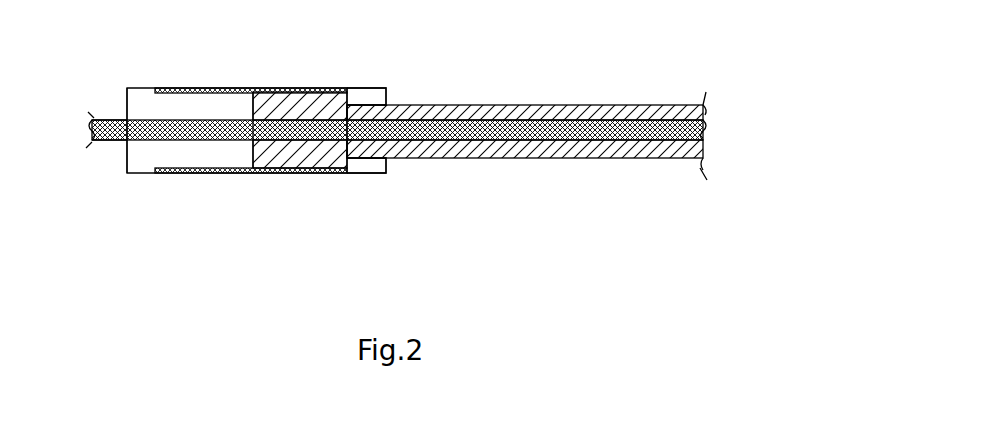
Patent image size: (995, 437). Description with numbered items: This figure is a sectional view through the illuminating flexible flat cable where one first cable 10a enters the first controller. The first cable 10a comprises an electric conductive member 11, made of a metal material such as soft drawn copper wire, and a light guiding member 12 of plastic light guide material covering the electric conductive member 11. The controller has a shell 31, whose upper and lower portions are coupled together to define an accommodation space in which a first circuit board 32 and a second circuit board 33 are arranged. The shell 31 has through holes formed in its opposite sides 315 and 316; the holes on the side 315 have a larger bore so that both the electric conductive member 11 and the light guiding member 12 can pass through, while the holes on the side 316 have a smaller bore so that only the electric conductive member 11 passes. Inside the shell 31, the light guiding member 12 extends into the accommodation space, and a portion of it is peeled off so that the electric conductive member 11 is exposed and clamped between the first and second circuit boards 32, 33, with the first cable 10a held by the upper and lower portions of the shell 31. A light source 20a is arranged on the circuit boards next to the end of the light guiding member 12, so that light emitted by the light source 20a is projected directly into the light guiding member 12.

The first cable 10a is at (402, 121).
The electric conductive member 11 is at (418, 132).
The light guiding member 12 is at (498, 102).
The shell 31 is at (270, 113).
The side 315 is at (386, 96).
The side 316 is at (125, 106).
The first circuit board 32 is at (246, 89).
The second circuit board 33 is at (232, 173).
The light source 20a is at (305, 91).